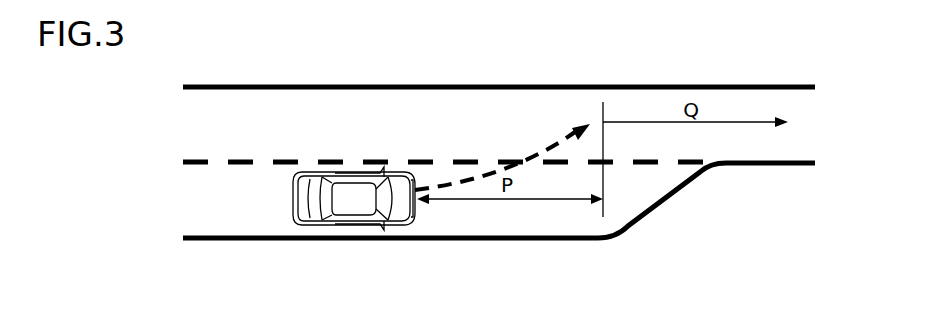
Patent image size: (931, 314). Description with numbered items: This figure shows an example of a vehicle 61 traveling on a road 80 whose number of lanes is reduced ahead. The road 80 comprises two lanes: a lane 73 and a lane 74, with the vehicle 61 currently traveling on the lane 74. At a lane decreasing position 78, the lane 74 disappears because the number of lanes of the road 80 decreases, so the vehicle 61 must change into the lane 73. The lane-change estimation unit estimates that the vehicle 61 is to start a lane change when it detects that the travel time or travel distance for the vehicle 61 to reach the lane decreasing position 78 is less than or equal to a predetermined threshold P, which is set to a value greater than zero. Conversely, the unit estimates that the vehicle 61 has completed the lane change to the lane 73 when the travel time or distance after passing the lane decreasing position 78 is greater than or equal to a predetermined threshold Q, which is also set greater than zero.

The vehicle 61 is at (393, 170).
The lane 73 is at (174, 88).
The lane 74 is at (174, 163).
The lane decreasing position 78 is at (603, 105).
The road 80 is at (122, 110).